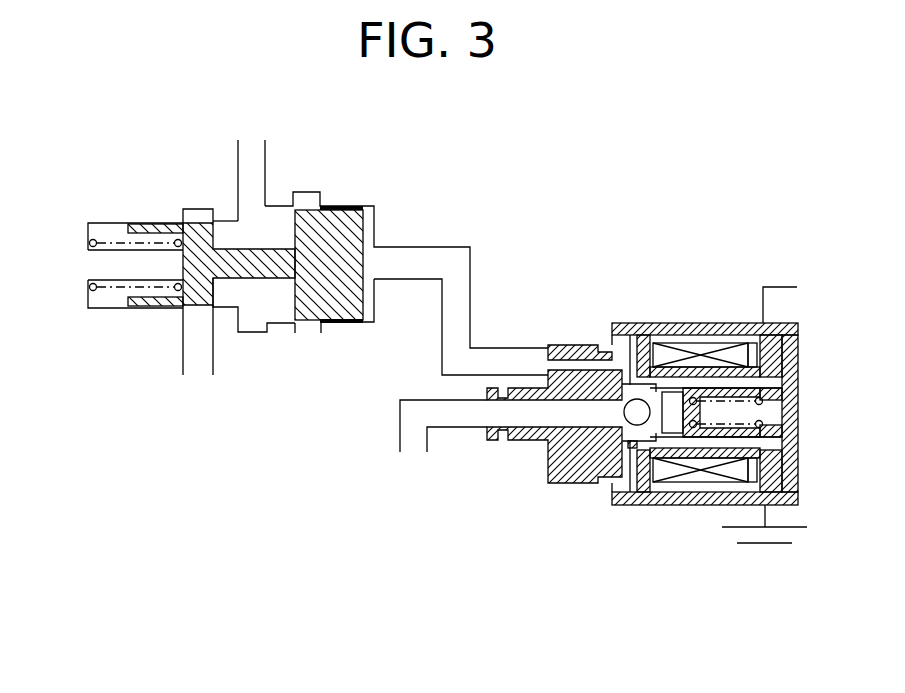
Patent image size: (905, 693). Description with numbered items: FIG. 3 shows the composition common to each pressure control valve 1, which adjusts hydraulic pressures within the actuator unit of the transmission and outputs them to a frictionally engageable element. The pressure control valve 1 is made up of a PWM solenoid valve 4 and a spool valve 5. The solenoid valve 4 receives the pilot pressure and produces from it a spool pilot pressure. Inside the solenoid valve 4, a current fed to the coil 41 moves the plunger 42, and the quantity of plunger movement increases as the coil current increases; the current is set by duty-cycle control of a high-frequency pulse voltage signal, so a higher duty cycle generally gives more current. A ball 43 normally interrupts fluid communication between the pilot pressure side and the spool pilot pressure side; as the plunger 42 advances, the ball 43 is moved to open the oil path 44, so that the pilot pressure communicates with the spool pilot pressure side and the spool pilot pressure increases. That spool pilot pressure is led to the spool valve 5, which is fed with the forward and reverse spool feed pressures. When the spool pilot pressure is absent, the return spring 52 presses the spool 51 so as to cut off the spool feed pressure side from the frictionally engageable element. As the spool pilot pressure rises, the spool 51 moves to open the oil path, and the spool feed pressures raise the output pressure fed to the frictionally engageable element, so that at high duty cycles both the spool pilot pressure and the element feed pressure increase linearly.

The pressure control valve 1 is at (658, 152).
The PWM solenoid valve 4 is at (602, 450).
The spool valve 5 is at (303, 313).
The coil 41 is at (703, 345).
The plunger 42 is at (740, 462).
The ball 43 is at (620, 476).
The oil path 44 is at (650, 340).
The spool 51 is at (345, 208).
The return spring 52 is at (113, 242).